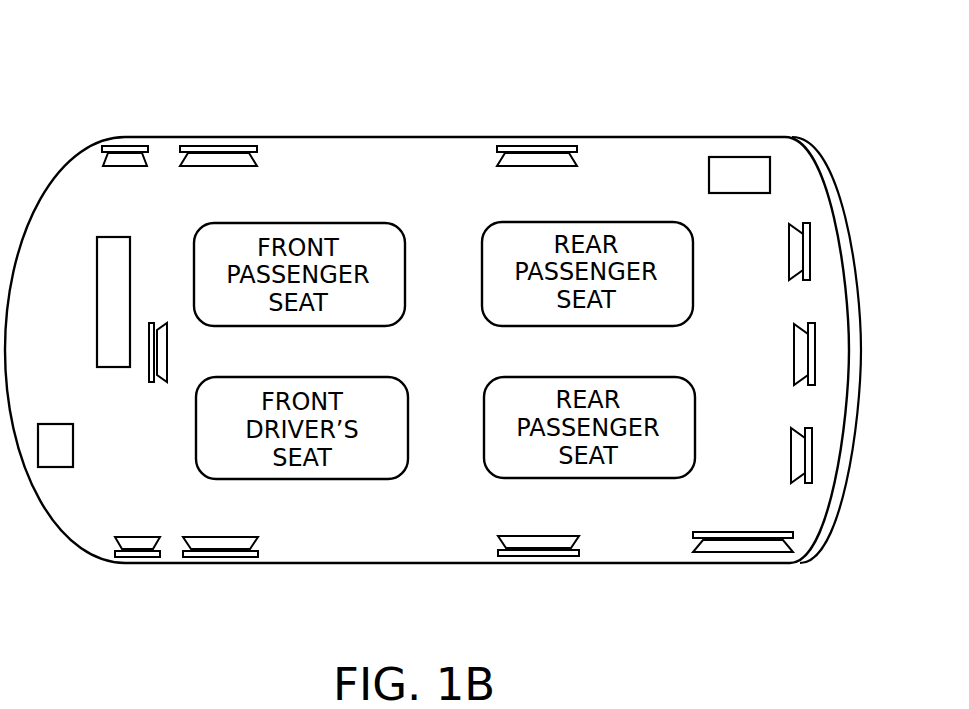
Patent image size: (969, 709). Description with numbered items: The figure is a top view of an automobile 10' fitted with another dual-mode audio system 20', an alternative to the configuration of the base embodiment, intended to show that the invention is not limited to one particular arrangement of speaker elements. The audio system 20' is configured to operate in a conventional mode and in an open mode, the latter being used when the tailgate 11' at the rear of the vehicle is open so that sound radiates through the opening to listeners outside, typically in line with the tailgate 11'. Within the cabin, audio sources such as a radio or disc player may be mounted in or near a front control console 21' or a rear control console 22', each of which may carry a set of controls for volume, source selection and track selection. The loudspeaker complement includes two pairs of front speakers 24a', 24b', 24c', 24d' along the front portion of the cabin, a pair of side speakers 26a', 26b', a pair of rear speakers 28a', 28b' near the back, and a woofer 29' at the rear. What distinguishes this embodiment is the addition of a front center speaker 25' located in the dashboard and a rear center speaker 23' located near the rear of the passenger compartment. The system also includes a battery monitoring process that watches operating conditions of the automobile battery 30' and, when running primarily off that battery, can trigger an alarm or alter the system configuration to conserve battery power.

The automobile 10' is at (427, 308).
The tailgate 11' is at (857, 350).
The dual-mode audio system 20' is at (783, 56).
The front control console 21' is at (92, 302).
The rear control console 22' is at (704, 171).
The rear center speaker 23' is at (777, 350).
The front speaker 24a' is at (85, 120).
The front speaker 24b' is at (102, 578).
The front speaker 24c' is at (244, 120).
The front speaker 24d' is at (244, 576).
The front center speaker 25' is at (153, 382).
The side speaker 26a' is at (563, 128).
The side speaker 26b' is at (561, 581).
The rear speaker 28a' is at (762, 247).
The rear speaker 28b' is at (768, 449).
The woofer 29' is at (767, 578).
The automobile battery 30' is at (51, 414).